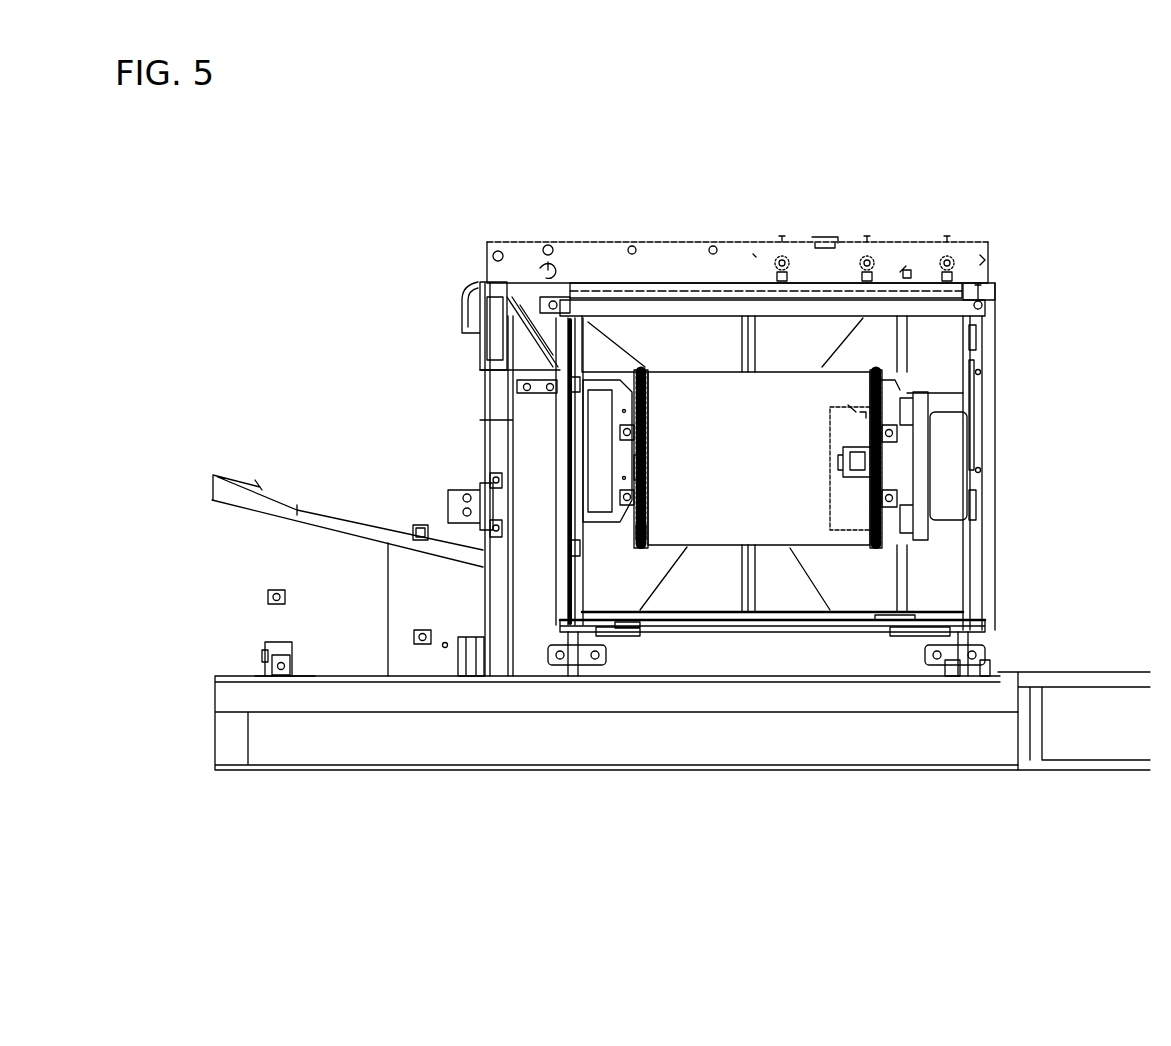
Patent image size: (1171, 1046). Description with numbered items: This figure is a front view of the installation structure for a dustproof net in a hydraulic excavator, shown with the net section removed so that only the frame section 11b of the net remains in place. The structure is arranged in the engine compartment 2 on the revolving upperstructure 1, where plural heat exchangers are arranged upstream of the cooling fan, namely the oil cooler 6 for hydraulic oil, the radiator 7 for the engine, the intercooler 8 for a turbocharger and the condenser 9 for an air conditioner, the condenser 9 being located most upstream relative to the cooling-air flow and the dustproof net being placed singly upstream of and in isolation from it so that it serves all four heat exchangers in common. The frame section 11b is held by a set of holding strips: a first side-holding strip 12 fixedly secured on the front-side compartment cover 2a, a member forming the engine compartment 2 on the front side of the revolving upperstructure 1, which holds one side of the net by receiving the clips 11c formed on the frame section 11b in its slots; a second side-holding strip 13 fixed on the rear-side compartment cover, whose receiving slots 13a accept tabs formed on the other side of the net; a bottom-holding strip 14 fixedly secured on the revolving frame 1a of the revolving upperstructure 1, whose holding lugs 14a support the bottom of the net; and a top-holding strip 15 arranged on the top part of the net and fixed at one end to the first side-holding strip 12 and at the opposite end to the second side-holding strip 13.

The revolving upperstructure 1 is at (452, 784).
The revolving frame 1a is at (1100, 675).
The engine compartment 2 is at (682, 228).
The front-side compartment cover 2a is at (483, 310).
The oil cooler 6 is at (670, 342).
The radiator 7 is at (807, 340).
The intercooler 8 is at (935, 340).
The condenser 9 is at (710, 367).
The frame section 11b is at (752, 318).
The clips 11c is at (578, 413).
The first side-holding strip 12 is at (553, 434).
The second side-holding strip 13 is at (985, 387).
The receiving slots 13a is at (975, 340).
The bottom-holding strip 14 is at (717, 628).
The holding lugs 14a is at (630, 628).
The top-holding strip 15 is at (712, 298).